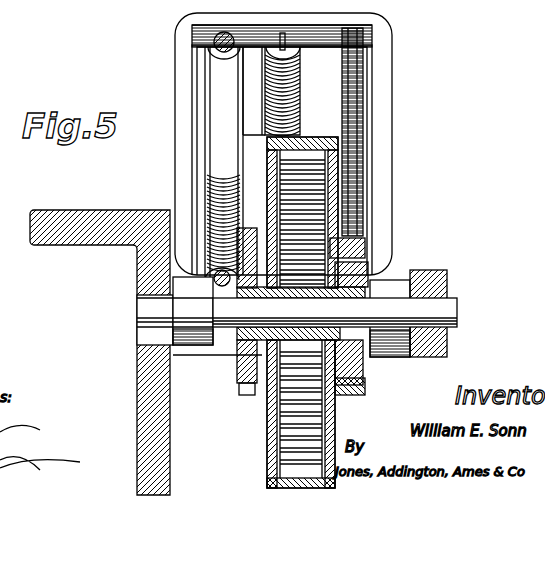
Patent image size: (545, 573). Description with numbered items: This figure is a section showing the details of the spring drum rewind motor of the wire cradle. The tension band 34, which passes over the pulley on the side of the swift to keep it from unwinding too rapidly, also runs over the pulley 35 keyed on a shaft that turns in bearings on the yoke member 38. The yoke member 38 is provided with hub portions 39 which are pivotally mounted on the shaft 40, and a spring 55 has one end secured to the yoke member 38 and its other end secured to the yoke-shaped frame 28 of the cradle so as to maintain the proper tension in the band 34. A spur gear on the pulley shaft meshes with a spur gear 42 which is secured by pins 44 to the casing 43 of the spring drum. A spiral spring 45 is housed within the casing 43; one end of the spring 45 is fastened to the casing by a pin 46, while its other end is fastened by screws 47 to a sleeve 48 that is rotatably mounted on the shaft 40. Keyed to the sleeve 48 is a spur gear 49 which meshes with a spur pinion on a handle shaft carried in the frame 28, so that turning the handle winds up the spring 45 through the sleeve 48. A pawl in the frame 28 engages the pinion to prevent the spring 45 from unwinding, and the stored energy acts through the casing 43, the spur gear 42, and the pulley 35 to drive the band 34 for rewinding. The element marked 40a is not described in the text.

The frame 28 is at (140, 400).
The tension band 34 is at (215, 280).
The pulley 35 is at (208, 215).
The yoke member 38 is at (392, 111).
The hub portions 39 is at (395, 292).
The shaft 40 is at (447, 320).
The bearing block 40a is at (437, 347).
The spur gear 42 is at (367, 245).
The casing 43 is at (335, 418).
The pins 44 is at (362, 371).
The spiral spring 45 is at (343, 200).
The pin 46 is at (340, 160).
The screws 47 is at (340, 265).
The sleeve 48 is at (238, 357).
The spur gear 49 is at (250, 392).
The spring 55 is at (300, 88).